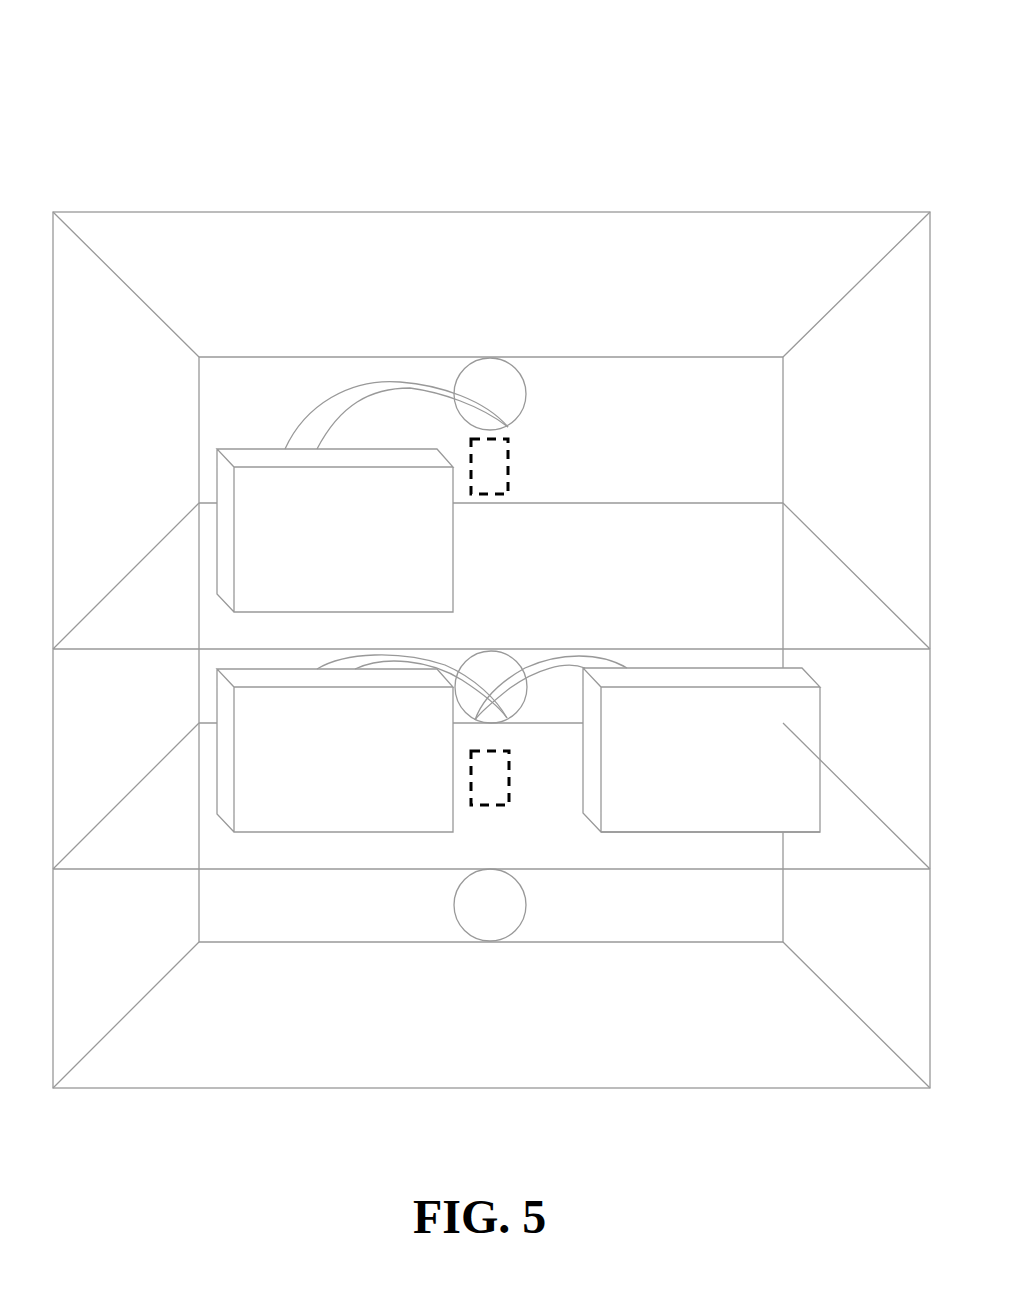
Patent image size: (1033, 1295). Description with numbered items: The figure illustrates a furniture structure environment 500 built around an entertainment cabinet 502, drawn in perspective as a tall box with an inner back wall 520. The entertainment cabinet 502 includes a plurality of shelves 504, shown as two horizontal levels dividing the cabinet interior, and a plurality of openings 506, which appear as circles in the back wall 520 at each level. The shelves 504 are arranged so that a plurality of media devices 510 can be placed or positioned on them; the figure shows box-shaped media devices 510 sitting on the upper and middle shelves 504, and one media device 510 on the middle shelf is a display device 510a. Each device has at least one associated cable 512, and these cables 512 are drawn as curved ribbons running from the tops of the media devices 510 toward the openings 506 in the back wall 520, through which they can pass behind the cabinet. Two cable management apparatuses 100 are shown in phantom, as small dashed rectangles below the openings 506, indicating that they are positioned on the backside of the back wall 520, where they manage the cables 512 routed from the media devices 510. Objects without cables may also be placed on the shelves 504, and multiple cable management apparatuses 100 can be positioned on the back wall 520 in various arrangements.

The furniture structure environment 500 is at (494, 72).
The entertainment cabinet 502 is at (601, 212).
The shelves 504 is at (89, 649).
The openings 506 is at (490, 358).
The media devices 510 is at (366, 552).
The display device 510a is at (738, 808).
The cable 512 is at (298, 430).
The back wall 520 is at (695, 478).
The cable management apparatus 100 is at (509, 467).